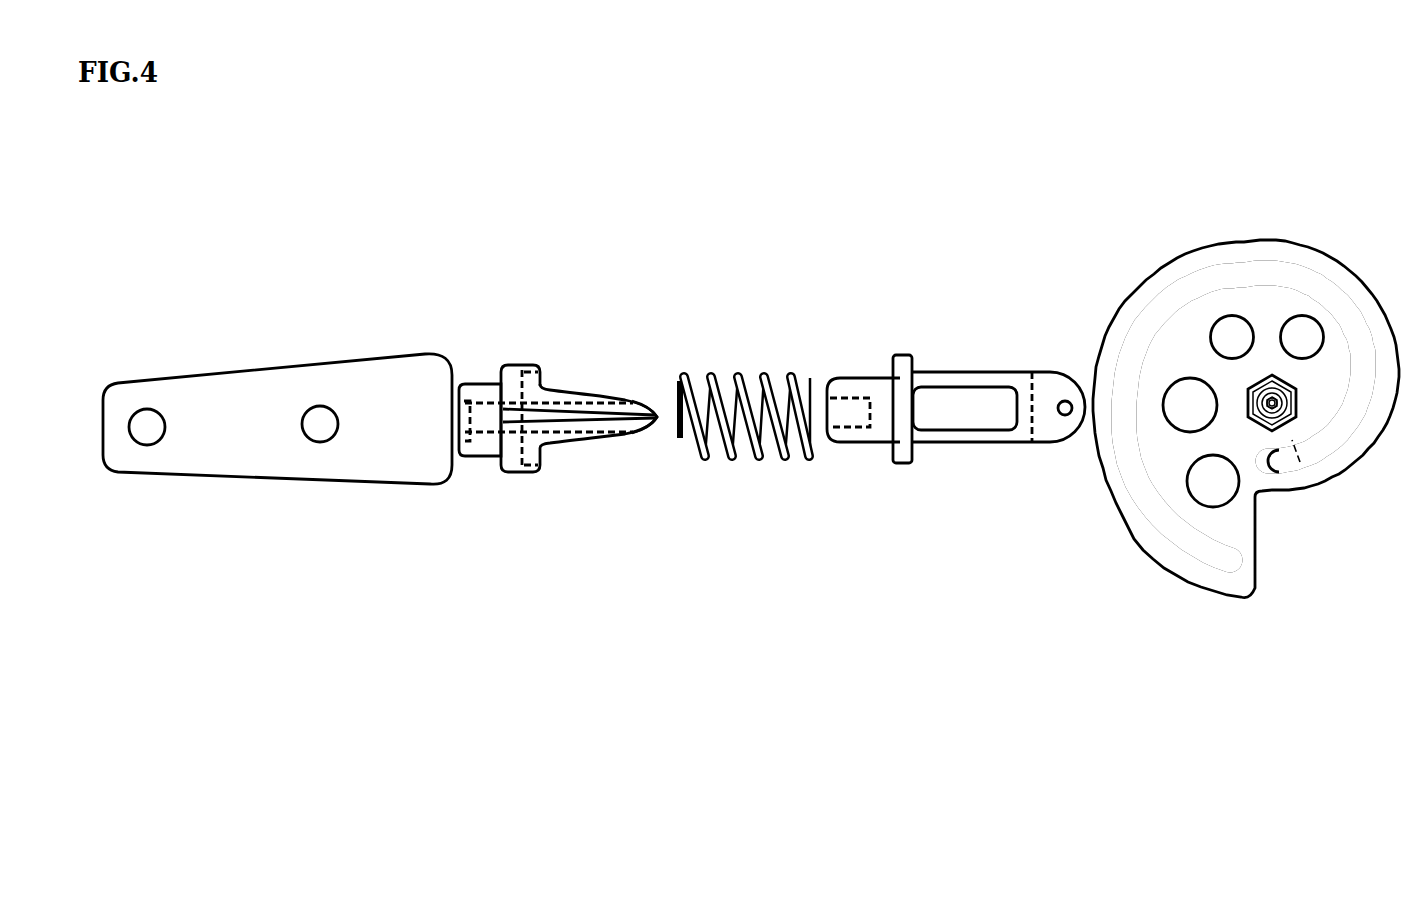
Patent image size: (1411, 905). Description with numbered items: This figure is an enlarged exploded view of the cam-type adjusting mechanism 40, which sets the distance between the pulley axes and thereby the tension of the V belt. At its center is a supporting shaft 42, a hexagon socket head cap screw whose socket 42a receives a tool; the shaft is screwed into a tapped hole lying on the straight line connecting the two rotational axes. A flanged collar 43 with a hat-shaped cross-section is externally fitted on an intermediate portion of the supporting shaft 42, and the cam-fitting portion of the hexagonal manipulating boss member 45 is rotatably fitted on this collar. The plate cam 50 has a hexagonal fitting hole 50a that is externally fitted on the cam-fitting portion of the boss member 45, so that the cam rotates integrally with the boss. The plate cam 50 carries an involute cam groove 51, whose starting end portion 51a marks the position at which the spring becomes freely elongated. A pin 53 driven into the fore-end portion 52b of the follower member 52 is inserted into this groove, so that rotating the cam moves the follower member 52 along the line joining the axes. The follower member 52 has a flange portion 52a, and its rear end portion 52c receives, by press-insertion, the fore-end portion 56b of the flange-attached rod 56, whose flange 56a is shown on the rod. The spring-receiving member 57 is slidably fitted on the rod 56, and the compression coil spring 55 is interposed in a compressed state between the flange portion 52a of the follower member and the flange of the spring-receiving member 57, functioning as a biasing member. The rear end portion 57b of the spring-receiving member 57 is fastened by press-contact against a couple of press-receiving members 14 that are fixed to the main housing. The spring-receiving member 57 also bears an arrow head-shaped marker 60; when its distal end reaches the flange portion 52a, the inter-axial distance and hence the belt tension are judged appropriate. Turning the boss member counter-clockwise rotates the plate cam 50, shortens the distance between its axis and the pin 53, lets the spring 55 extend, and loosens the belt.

The cam-type adjusting mechanism 40 is at (737, 226).
The press-receiving member 14 is at (288, 384).
The spring-receiving member 57 is at (510, 373).
The rear end portion 57b is at (460, 385).
The rod 56 is at (590, 440).
The flange 56a is at (468, 458).
The fore-end portion 56b is at (632, 443).
The marker 60 is at (632, 443).
The compression coil spring 55 is at (743, 372).
The follower member 52 is at (933, 378).
The flange portion 52a is at (899, 465).
The fore-end portion 52b is at (1052, 383).
The rear end portion 52c is at (847, 390).
The pin 53 is at (1065, 415).
The plate cam 50 is at (1217, 255).
The hexagonal fitting hole 50a is at (1257, 383).
The cam groove 51 is at (1146, 336).
The starting end portion 51a is at (1273, 470).
The flanged collar 43 is at (1252, 424).
The supporting shaft 42 is at (1303, 387).
The hexagon socket 42a is at (1295, 413).
The hexagonal manipulating boss member 45 is at (1287, 425).